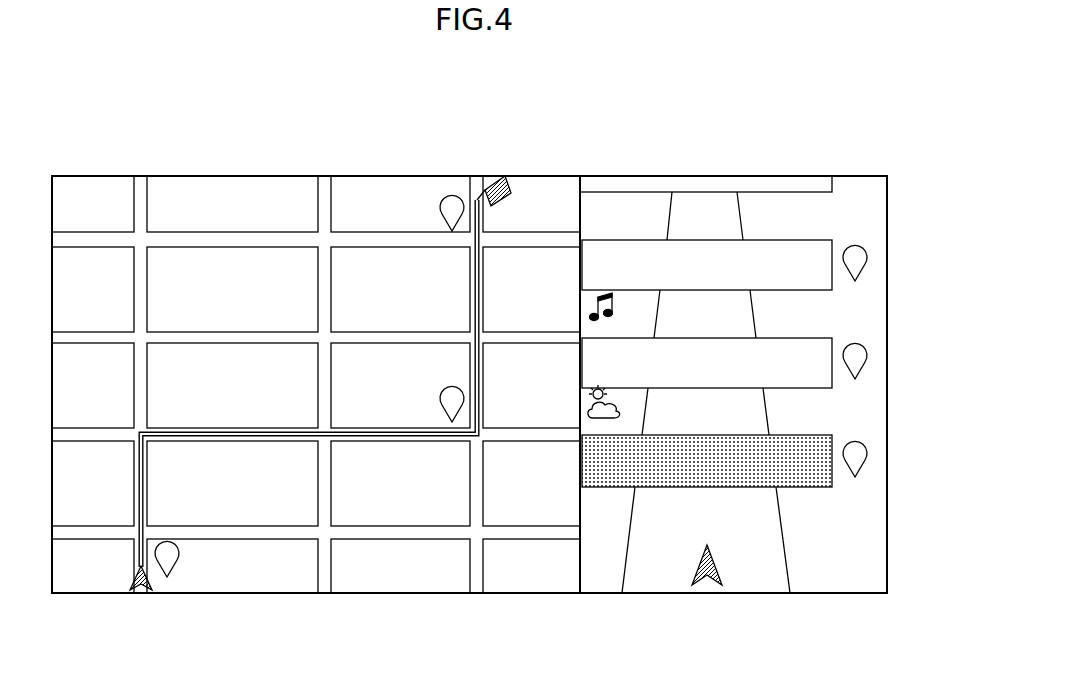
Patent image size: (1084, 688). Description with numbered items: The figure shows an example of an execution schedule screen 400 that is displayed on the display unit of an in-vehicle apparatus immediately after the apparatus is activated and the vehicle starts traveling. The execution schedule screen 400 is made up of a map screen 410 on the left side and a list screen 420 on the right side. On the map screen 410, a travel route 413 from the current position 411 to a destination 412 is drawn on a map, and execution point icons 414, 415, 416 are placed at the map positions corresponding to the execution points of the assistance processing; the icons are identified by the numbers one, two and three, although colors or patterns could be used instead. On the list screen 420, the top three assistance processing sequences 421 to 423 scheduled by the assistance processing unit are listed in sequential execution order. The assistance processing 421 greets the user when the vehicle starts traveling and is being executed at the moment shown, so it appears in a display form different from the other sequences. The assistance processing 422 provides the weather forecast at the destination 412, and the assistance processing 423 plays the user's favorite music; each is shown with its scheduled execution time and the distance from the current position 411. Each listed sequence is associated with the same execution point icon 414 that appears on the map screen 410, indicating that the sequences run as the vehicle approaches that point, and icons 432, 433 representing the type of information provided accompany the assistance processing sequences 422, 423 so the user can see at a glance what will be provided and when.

The execution schedule screen 400 is at (864, 142).
The map screen 410 is at (108, 196).
The current position 411 is at (150, 582).
The destination 412 is at (498, 178).
The travel route 413 is at (146, 478).
The execution point icon 414 is at (183, 553).
The execution point icon 415 is at (440, 395).
The execution point icon 416 is at (440, 202).
The list screen 420 is at (588, 195).
The assistance processing 421 is at (833, 437).
The assistance processing 422 is at (833, 340).
The assistance processing 423 is at (833, 243).
The icon 432 is at (586, 395).
The icon 433 is at (586, 302).